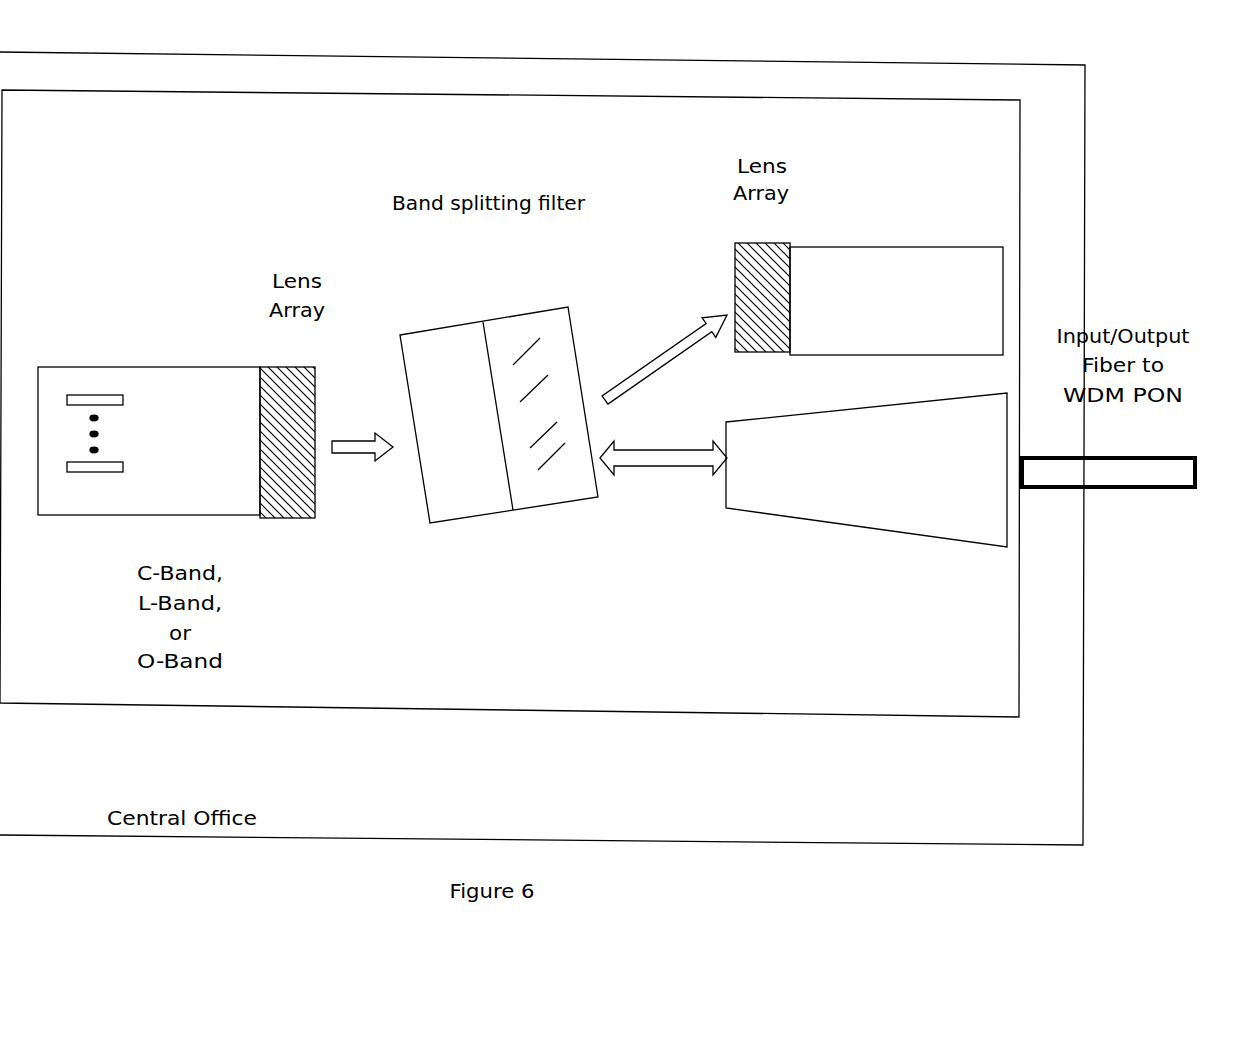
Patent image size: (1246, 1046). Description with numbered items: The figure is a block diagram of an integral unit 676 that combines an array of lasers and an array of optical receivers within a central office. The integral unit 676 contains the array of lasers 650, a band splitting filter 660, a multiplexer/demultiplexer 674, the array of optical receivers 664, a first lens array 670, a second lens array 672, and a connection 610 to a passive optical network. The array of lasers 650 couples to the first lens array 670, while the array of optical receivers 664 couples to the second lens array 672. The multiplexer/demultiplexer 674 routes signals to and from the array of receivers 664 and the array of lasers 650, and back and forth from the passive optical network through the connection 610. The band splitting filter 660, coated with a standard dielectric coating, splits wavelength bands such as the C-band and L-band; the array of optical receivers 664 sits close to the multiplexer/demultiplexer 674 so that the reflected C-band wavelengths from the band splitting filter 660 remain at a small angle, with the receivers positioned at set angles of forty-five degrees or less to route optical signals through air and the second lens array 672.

The connection to a passive optical network 610 is at (1032, 503).
The array of lasers 650 is at (152, 332).
The band splitting filter 660 is at (485, 530).
The array of optical receivers 664 is at (938, 330).
The first lens array 670 is at (296, 547).
The second lens array 672 is at (780, 227).
The multiplexer/demultiplexer 674 is at (917, 494).
The integral unit 676 is at (590, 656).